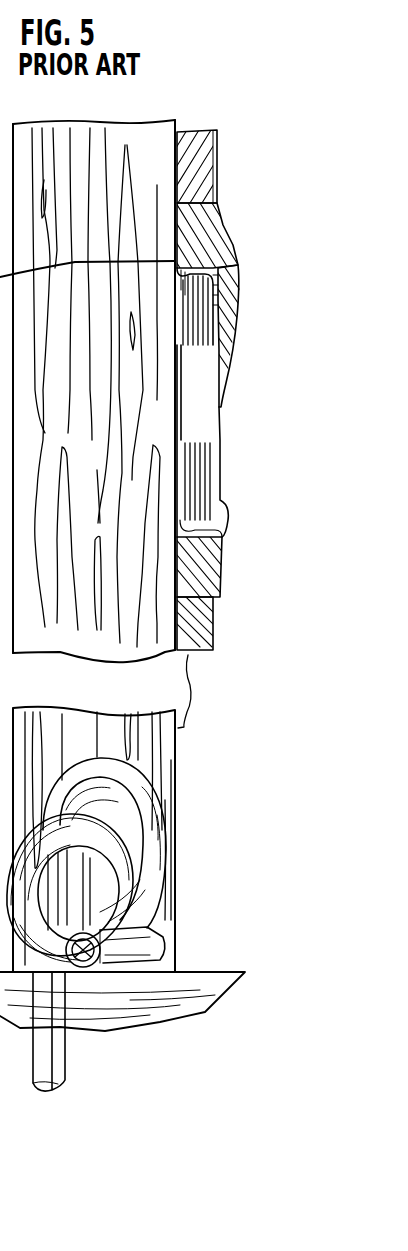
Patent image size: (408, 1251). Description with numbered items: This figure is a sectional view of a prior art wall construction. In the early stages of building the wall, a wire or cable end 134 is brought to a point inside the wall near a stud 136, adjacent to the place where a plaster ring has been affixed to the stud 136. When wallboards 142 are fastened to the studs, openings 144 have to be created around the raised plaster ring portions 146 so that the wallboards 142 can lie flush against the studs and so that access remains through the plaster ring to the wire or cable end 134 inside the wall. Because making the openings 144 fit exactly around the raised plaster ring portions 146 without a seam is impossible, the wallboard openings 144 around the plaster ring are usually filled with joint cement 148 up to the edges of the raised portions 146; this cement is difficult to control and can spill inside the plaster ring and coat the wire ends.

The stud 136 is at (122, 142).
The wallboard 142 is at (200, 172).
The opening 144 is at (215, 222).
The raised plaster ring portion 146 is at (200, 267).
The joint cement 148 is at (230, 310).
The wire or cable end 134 is at (147, 947).